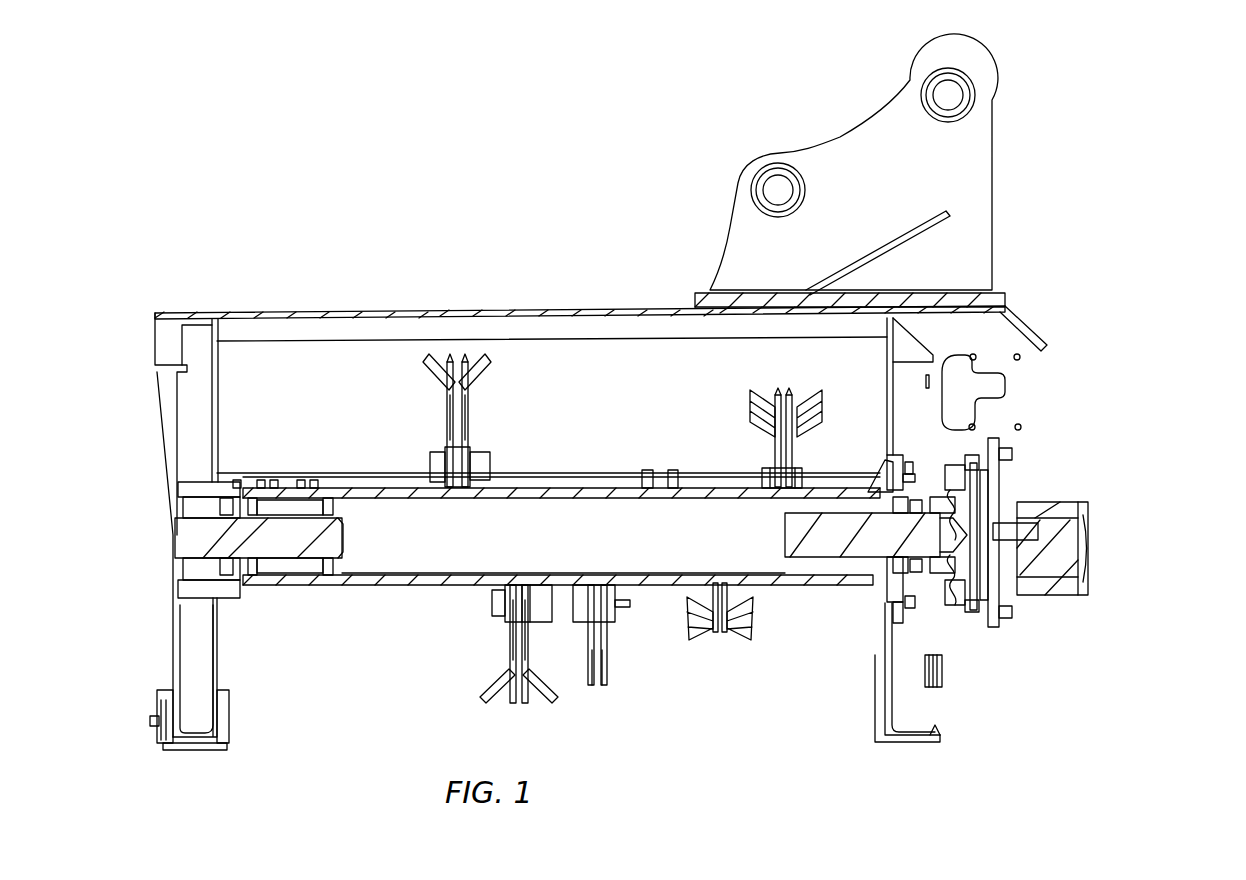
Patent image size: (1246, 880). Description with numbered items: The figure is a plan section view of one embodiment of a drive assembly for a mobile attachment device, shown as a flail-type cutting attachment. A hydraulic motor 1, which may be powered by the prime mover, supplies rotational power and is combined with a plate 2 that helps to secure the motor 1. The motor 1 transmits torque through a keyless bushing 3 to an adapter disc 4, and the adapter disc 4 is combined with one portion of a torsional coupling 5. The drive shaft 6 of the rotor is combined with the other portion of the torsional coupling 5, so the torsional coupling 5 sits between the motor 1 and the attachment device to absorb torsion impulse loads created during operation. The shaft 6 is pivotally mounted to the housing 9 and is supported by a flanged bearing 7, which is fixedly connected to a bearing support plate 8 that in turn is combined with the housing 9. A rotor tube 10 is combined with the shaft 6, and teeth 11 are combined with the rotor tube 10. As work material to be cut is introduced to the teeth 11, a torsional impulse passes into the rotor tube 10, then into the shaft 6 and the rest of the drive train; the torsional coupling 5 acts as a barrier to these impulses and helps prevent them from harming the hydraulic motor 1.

The hydraulic motor 1 is at (1119, 618).
The plate 2 is at (1069, 487).
The keyless bushing 3 is at (1020, 653).
The adapter disc 4 is at (1035, 401).
The torsional coupling 5 is at (985, 659).
The shaft 6 is at (896, 579).
The flanged bearing 7 is at (1009, 396).
The bearing support plate 8 is at (879, 452).
The housing 9 is at (598, 528).
The rotor tube 10 is at (558, 617).
The teeth 11 is at (728, 639).